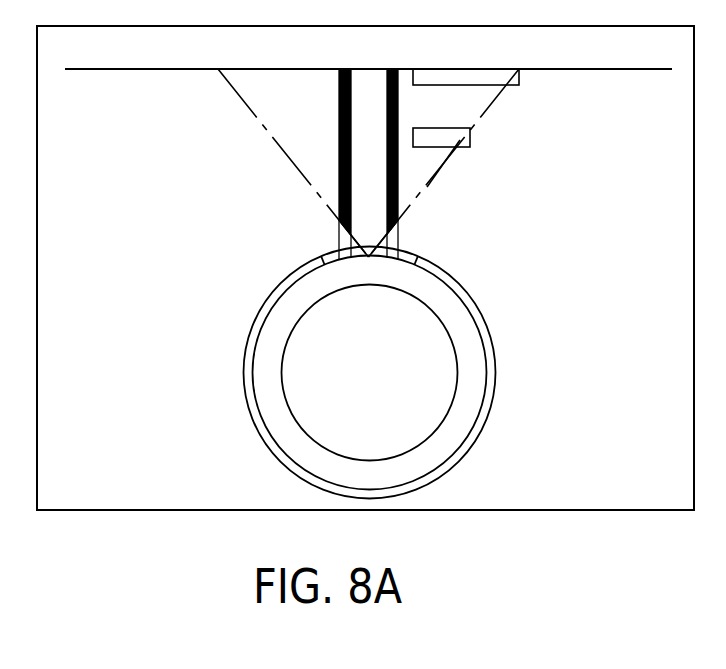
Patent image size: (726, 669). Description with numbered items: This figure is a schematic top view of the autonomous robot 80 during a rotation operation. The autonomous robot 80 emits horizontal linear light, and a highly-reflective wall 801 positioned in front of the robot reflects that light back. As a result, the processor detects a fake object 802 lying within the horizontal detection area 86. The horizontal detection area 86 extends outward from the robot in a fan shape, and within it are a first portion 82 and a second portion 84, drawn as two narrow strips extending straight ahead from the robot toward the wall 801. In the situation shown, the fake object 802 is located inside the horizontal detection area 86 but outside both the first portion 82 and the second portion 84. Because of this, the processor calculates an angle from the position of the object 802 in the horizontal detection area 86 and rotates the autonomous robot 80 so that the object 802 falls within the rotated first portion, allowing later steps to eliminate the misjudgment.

The autonomous robot 80 is at (265, 346).
The highly-reflective wall 801 is at (519, 76).
The fake object 802 is at (470, 137).
The first portion 82 is at (339, 136).
The second portion 84 is at (398, 105).
The horizontal detection area 86 is at (442, 163).